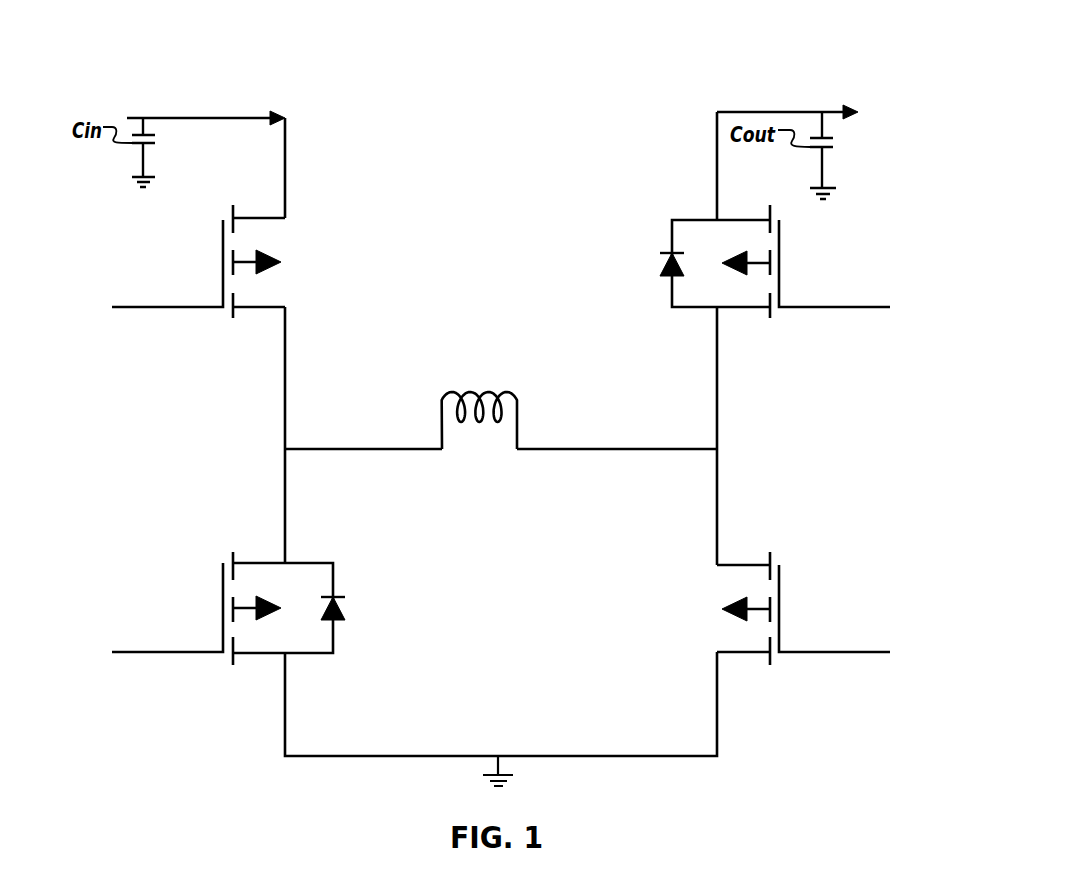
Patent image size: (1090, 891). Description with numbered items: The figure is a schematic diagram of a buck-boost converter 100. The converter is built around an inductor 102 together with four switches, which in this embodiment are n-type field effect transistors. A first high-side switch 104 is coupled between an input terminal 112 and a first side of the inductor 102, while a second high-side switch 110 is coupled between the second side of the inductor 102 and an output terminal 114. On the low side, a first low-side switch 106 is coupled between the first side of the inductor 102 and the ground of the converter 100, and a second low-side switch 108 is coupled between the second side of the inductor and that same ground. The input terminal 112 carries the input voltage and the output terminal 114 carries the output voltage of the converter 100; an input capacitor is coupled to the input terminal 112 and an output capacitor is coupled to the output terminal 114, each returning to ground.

The buck-boost converter 100 is at (97, 80).
The inductor 102 is at (438, 402).
The first high-side switch 104 is at (223, 252).
The first low-side switch 106 is at (223, 583).
The second low-side switch 108 is at (780, 607).
The second high-side switch 110 is at (780, 260).
The input terminal 112 is at (247, 117).
The output terminal 114 is at (738, 110).